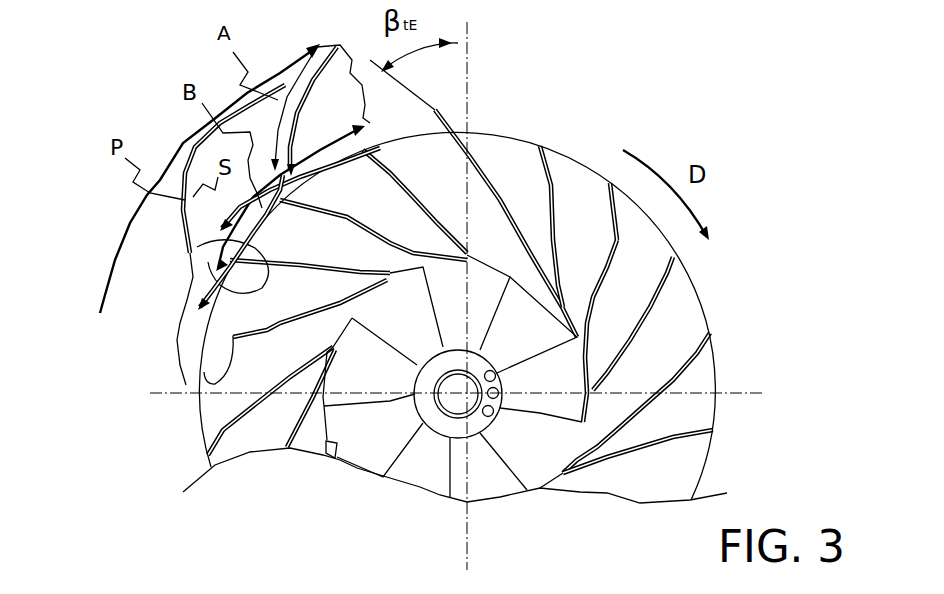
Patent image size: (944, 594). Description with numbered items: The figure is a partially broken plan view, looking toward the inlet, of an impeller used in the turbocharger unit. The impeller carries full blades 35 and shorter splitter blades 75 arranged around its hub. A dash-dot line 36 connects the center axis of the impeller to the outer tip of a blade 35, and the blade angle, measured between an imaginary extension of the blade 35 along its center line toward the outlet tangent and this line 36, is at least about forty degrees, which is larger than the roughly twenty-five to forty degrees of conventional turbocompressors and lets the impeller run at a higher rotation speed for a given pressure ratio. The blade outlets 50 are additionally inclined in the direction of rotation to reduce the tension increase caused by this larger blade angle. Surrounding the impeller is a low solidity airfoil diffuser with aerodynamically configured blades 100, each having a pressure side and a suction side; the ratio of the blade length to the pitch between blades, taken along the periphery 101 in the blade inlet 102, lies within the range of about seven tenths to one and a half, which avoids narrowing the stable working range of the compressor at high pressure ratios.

The blade 35 is at (477, 157).
The line 36 is at (470, 100).
The splitter blade 75 is at (555, 152).
The blade outlet 50 is at (708, 318).
The blade 100 is at (192, 168).
The periphery 101 is at (210, 280).
The blade inlet 102 is at (192, 305).